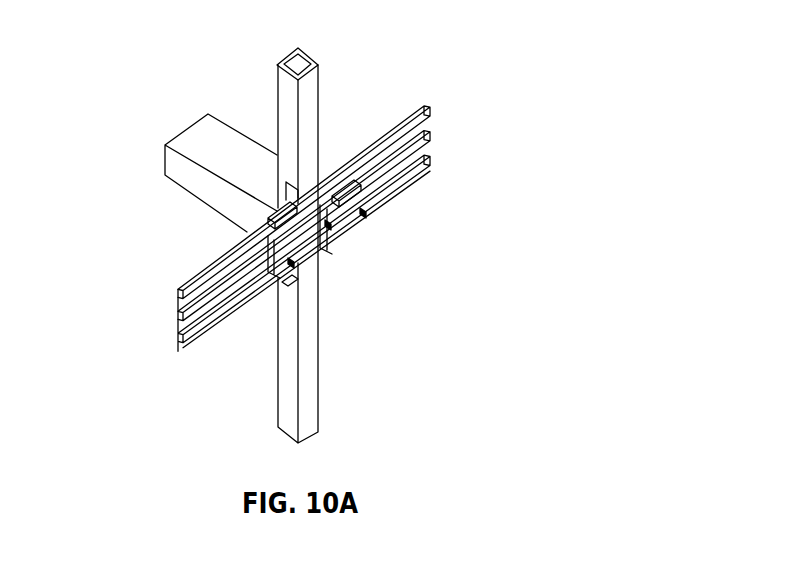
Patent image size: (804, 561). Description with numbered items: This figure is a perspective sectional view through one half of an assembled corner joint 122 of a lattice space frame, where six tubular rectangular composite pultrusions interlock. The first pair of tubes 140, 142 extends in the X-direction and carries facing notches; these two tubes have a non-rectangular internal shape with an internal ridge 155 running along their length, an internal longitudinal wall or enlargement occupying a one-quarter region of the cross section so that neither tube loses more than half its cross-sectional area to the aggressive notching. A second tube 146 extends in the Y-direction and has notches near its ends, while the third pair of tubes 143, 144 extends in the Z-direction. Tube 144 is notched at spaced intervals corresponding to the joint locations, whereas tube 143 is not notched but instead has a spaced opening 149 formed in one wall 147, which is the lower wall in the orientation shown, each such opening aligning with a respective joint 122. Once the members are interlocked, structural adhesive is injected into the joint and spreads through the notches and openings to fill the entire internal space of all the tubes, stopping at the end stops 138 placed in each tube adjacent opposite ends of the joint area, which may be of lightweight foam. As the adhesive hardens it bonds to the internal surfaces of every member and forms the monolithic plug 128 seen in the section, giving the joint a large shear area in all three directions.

The corner joint 122 is at (328, 157).
The monolithic plug 128 is at (341, 200).
The end stop 138 is at (370, 204).
The first tube 140 is at (288, 280).
The first tube 142 is at (333, 252).
The third tube 143 is at (424, 108).
The third tube 144 is at (429, 171).
The second tube 146 is at (313, 80).
The wall 147 is at (428, 135).
The opening 149 is at (292, 182).
The internal ridge 155 is at (262, 236).